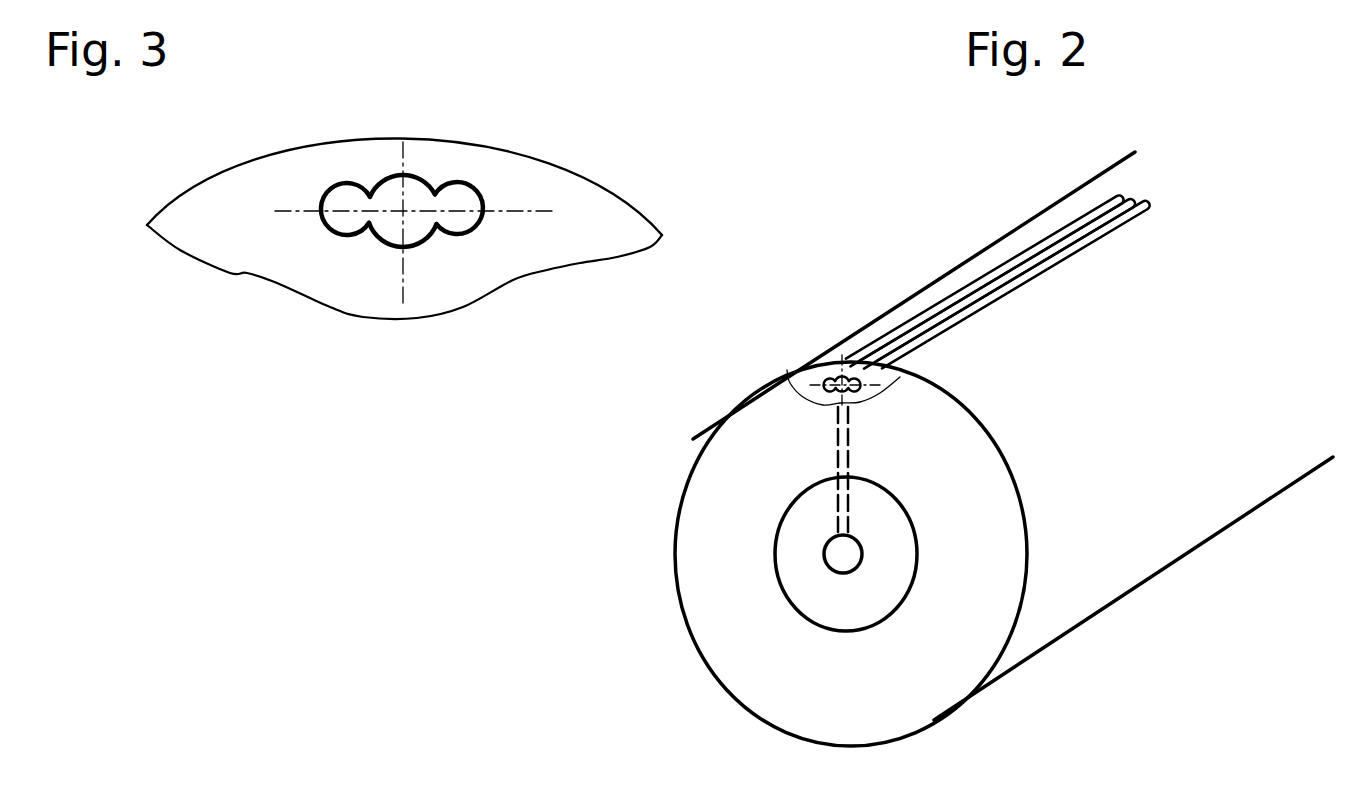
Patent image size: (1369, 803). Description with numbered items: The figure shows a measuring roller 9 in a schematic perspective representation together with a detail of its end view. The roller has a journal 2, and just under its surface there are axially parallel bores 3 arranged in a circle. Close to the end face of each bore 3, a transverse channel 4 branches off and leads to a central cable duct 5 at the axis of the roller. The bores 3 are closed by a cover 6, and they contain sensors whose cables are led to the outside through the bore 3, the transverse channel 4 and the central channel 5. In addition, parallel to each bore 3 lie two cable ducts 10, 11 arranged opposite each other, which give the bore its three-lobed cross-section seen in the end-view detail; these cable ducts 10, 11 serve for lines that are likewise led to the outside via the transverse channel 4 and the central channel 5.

In FIG. 2, the journal 2 is at (797, 577).
In FIG. 3, the bore 3 is at (387, 240).
In FIG. 2, the bore 3 is at (848, 395).
In FIG. 2, the transverse channel 4 is at (830, 445).
In FIG. 2, the central cable duct 5 is at (840, 560).
In FIG. 2, the cover 6 is at (958, 633).
In FIG. 2, the measuring roller 9 is at (1233, 488).
In FIG. 3, the cable duct 10 is at (340, 200).
In FIG. 2, the cable duct 10 is at (823, 386).
In FIG. 3, the cable duct 11 is at (477, 197).
In FIG. 2, the cable duct 11 is at (862, 383).